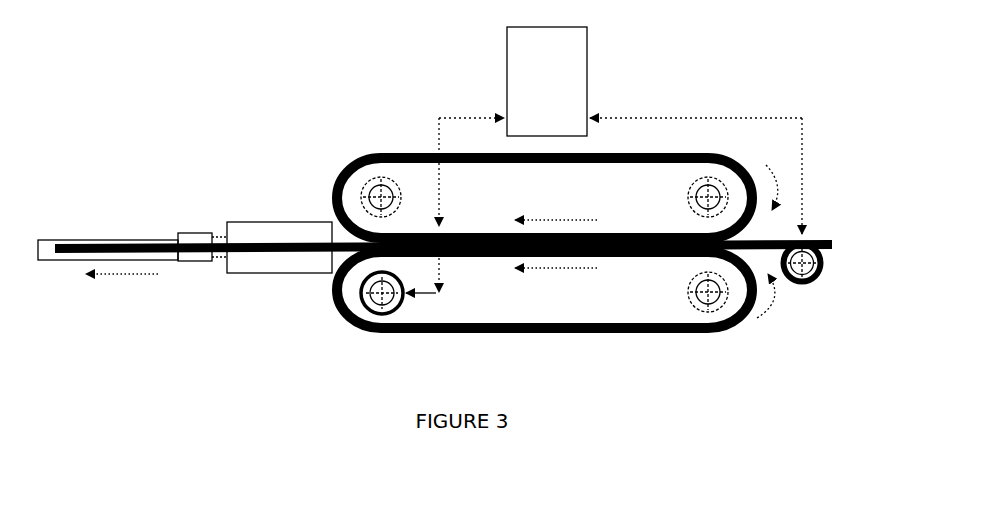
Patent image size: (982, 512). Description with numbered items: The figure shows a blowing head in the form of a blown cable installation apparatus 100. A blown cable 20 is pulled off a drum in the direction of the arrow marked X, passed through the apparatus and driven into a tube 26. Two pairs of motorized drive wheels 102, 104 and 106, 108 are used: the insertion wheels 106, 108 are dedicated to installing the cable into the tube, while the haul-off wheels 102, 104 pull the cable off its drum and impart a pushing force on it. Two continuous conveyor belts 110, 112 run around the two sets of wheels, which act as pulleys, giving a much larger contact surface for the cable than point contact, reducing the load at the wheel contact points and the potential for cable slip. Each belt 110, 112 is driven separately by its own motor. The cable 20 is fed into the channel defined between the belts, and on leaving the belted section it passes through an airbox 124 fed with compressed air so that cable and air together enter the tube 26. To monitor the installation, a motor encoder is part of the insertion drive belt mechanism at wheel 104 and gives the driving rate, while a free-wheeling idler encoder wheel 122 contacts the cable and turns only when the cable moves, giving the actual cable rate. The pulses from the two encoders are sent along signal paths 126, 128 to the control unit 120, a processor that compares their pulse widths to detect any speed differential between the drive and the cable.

The blown cable installation apparatus 100 is at (382, 108).
The blown cable 20 is at (160, 244).
The tube 26 is at (48, 240).
The drive wheel 102 is at (378, 170).
The drive wheel 104 is at (360, 318).
The drive wheel 106 is at (714, 168).
The drive wheel 108 is at (721, 312).
The conveyor belt 110 is at (592, 165).
The conveyor belt 112 is at (594, 334).
The control unit 120 is at (547, 81).
The idler encoder wheel 122 is at (818, 279).
The airbox 124 is at (267, 273).
The encoder pulse signal 126 is at (482, 115).
The encoder pulse signal 128 is at (752, 115).